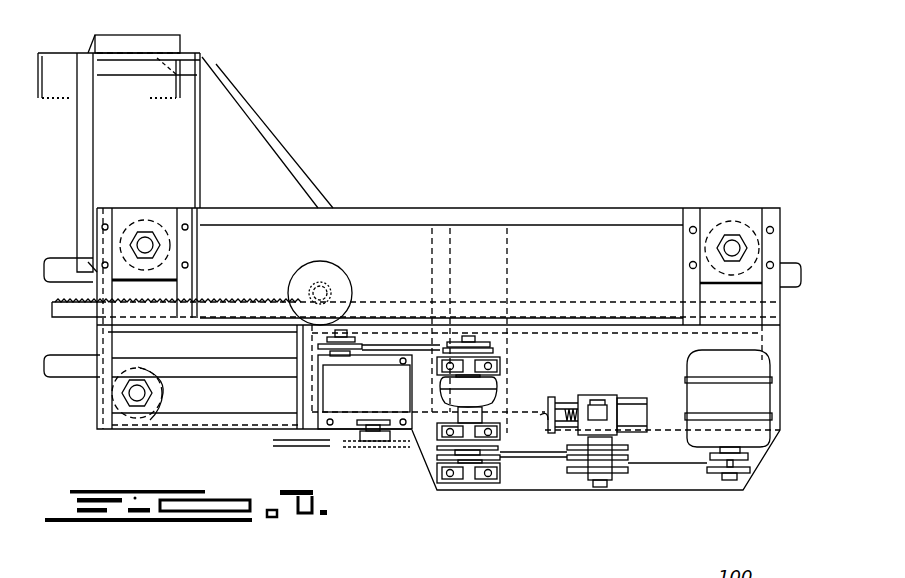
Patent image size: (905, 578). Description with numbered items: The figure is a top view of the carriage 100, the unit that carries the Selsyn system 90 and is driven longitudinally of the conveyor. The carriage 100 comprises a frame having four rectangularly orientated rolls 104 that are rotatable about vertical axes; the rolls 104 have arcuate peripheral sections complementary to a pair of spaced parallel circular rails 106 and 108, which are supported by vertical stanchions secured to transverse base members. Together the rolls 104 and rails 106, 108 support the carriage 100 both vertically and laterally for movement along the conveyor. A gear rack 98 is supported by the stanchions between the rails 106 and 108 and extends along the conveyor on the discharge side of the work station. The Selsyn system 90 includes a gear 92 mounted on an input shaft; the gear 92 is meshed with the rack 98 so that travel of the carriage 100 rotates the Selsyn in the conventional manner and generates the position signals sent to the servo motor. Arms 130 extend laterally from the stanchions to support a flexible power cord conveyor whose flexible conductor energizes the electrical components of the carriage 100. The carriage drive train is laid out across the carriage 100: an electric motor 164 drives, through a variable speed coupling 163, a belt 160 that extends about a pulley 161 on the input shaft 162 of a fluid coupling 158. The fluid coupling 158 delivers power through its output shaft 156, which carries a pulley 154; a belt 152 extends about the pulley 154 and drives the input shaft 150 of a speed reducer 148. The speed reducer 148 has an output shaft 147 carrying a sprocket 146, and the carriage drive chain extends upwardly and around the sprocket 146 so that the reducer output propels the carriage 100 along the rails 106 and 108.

The Selsyn system 90 is at (348, 262).
The gear 92 is at (300, 280).
The rack 98 is at (84, 318).
The carriage 100 is at (550, 208).
The rolls 104 is at (140, 205).
The rail 106 is at (70, 268).
The rail 108 is at (90, 372).
The arms 130 is at (192, 137).
The sprocket 146 is at (398, 449).
The output shaft 147 is at (355, 441).
The speed reducer 148 is at (346, 419).
The input shaft 150 is at (348, 337).
The belt 152 is at (434, 346).
The pulley 154 is at (480, 341).
The output shaft 156 is at (470, 338).
The fluid coupling 158 is at (505, 384).
The belt 160 is at (545, 454).
The pulley 161 is at (492, 461).
The input shaft 162 is at (474, 466).
The variable speed coupling 163 is at (604, 392).
The electric motor 164 is at (695, 449).